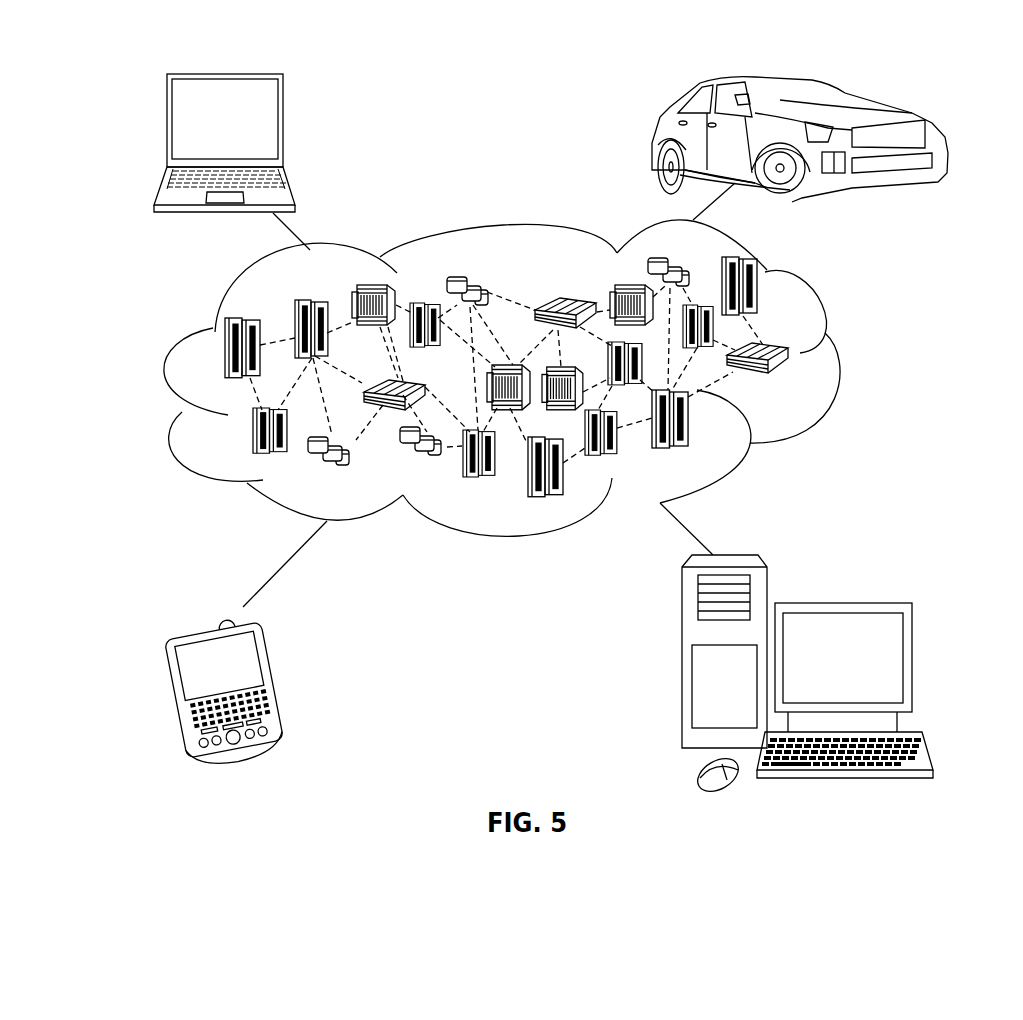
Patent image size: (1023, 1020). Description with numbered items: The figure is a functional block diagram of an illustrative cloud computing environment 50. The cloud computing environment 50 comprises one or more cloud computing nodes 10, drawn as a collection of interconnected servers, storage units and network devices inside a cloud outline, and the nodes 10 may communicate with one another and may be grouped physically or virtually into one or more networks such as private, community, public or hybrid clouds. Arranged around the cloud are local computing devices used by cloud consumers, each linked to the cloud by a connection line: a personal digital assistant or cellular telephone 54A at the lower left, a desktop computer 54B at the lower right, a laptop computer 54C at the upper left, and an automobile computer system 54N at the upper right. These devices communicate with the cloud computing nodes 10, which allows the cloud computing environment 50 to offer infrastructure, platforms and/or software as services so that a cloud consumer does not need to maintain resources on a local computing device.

The cloud computing environment 50 is at (843, 355).
The cloud computing nodes 10 is at (792, 382).
The personal digital assistant or cellular telephone 54A is at (275, 683).
The desktop computer 54B is at (842, 602).
The laptop computer 54C is at (283, 125).
The automobile computer system 54N is at (653, 138).